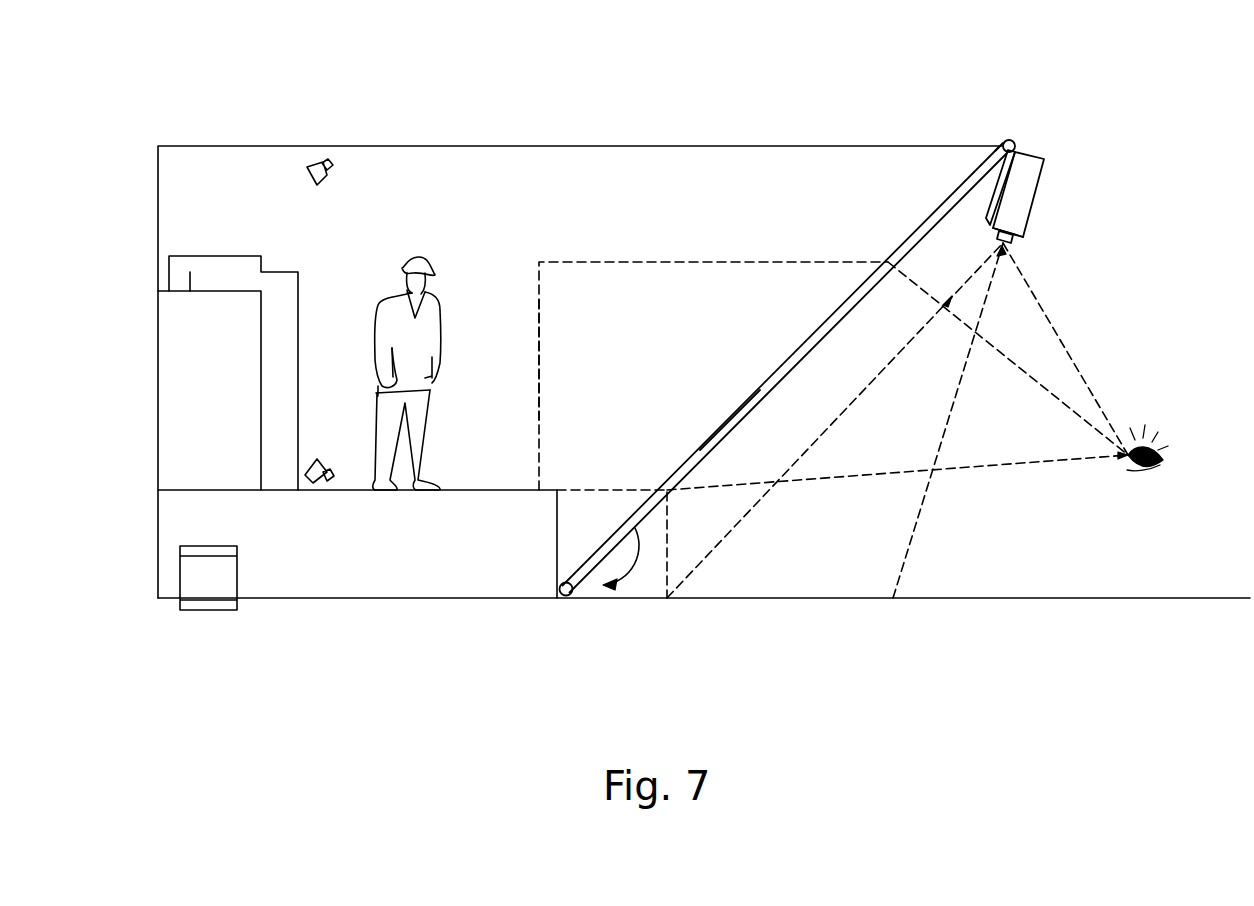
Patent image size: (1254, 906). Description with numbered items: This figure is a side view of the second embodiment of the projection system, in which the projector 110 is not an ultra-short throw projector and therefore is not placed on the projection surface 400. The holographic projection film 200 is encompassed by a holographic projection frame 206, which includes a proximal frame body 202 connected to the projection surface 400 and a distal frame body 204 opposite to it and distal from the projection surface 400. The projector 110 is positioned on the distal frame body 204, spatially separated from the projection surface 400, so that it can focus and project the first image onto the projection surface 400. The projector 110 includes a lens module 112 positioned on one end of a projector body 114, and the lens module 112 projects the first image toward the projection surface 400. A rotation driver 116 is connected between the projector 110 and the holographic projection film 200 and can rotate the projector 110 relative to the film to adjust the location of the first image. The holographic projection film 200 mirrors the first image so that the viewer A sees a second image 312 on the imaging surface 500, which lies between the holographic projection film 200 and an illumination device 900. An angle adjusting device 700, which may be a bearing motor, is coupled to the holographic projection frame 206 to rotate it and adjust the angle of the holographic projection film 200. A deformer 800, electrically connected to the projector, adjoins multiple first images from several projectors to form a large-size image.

The projector 110 is at (1043, 173).
The lens module 112 is at (1012, 243).
The projector body 114 is at (1037, 213).
The rotation driver 116 is at (1012, 139).
The holographic projection film 200 is at (923, 220).
The proximal frame body 202 is at (582, 576).
The distal frame body 204 is at (1002, 146).
The holographic projection frame 206 is at (735, 409).
The second image 312 is at (540, 366).
The projection surface 400 is at (840, 600).
The imaging surface 500 is at (549, 297).
The angle adjusting device 700 is at (566, 596).
The deformer 800 is at (207, 612).
The illumination device 900 is at (311, 486).
The viewer A is at (1163, 460).